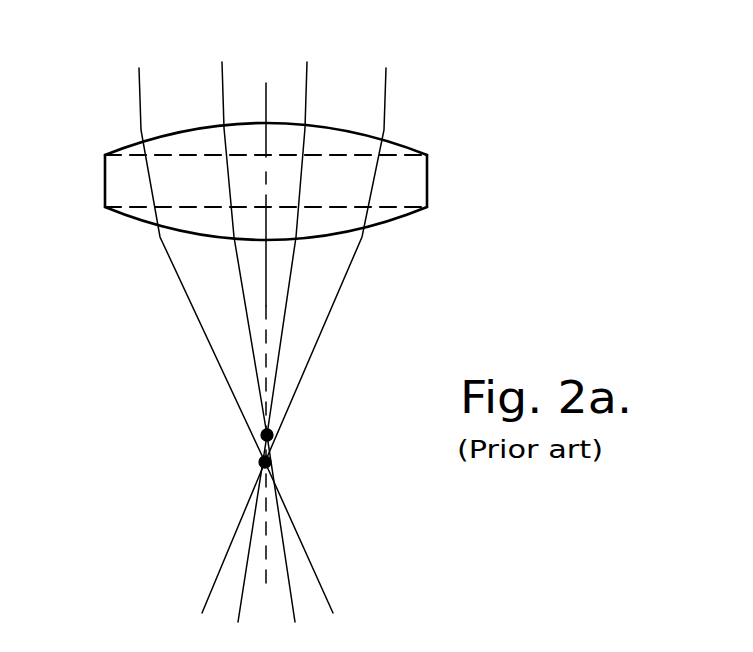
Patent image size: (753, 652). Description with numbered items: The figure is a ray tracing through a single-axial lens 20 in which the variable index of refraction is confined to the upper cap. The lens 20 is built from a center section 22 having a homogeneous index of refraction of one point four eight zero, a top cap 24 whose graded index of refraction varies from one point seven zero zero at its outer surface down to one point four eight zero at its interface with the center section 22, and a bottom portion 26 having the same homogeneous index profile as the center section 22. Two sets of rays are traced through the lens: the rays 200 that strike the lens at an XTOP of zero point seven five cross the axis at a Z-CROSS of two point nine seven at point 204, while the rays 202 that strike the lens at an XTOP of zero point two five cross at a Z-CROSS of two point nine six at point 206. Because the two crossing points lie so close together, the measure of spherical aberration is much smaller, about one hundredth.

The single-axial lens 20 is at (440, 128).
The center section 22 is at (107, 181).
The top cap 24 is at (189, 148).
The bottom portion 26 is at (187, 223).
The rays 200 is at (305, 82).
The rays 202 is at (138, 93).
The point 204 is at (260, 462).
The point 206 is at (262, 437).